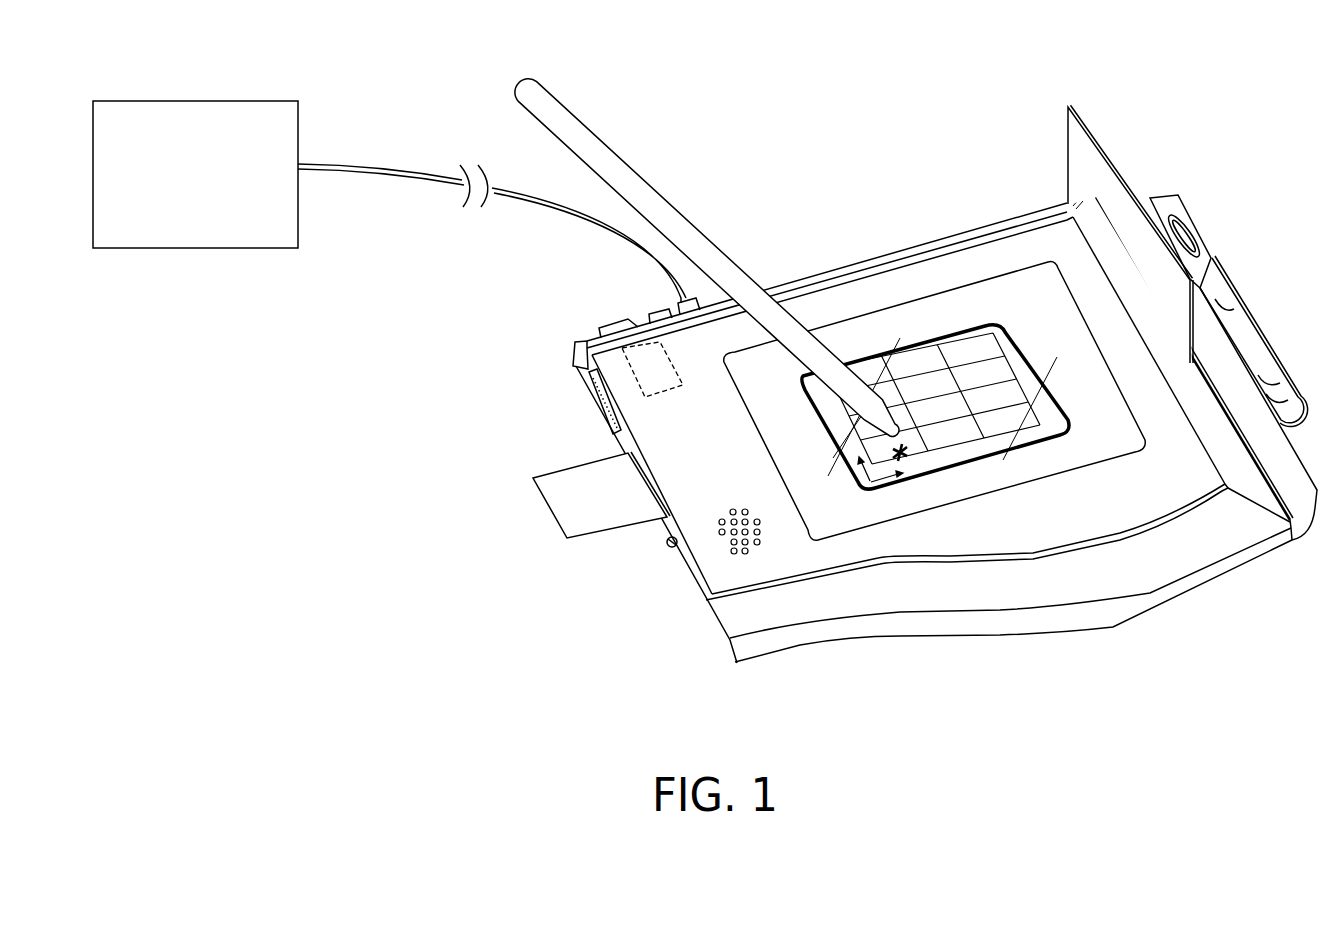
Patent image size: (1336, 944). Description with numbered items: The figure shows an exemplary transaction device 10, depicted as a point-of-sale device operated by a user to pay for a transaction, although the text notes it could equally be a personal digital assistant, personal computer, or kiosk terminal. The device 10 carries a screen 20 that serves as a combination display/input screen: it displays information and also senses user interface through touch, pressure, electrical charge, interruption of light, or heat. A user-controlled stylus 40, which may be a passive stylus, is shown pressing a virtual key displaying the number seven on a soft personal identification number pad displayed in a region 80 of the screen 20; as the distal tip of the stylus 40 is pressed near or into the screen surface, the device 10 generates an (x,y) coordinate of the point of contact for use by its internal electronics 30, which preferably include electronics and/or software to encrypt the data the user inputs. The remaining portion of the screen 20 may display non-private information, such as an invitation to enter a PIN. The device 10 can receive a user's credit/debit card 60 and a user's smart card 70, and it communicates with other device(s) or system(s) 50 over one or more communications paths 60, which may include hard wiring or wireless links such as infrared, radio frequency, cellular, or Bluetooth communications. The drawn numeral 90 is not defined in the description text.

The transaction device 10 is at (813, 131).
The screen 20 is at (1030, 306).
The internal electronics 30 is at (657, 387).
The stylus 40 is at (580, 108).
The other device(s) or system(s) 50 is at (247, 101).
The credit/debit card 60 is at (352, 165).
The smart card 70 is at (575, 462).
The region 80 is at (828, 393).
The screen input area 90 is at (779, 432).